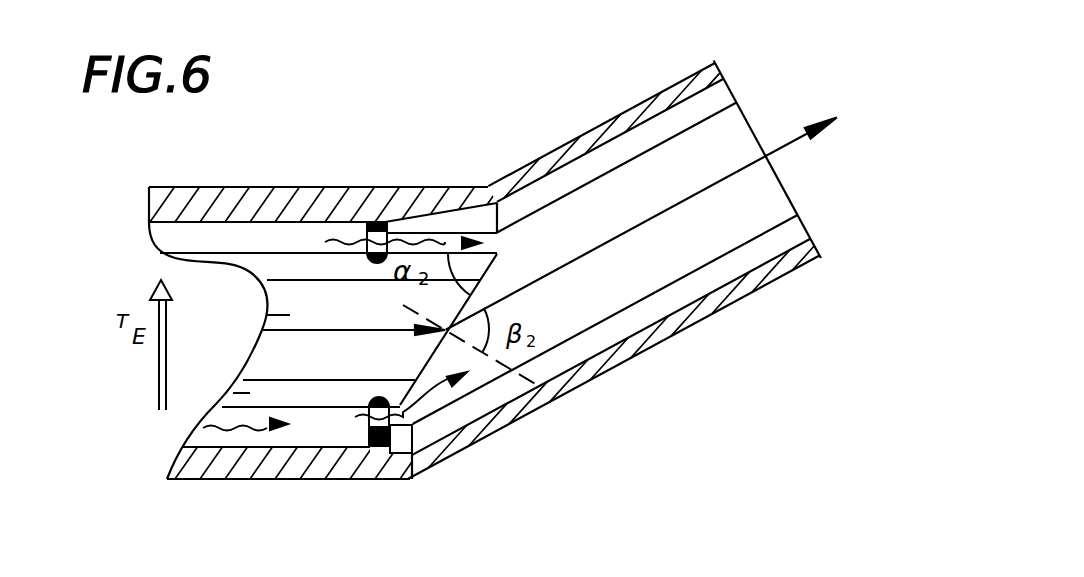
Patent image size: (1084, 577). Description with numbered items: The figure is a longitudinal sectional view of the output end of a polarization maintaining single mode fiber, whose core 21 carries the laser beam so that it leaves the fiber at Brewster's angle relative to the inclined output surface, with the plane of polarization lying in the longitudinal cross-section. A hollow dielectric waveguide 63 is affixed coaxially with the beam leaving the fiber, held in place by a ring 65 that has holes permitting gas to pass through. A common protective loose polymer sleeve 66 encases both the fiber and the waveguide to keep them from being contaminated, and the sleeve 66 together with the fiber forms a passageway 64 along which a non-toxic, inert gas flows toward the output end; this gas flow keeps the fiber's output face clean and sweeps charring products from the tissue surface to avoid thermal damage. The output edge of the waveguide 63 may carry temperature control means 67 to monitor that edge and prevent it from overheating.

The single mode fiber core 21 is at (283, 270).
The hollow dielectric waveguide 63 is at (720, 93).
The passageway 64 is at (270, 233).
The ring 65 is at (394, 187).
The protective loose polymer sleeve 66 is at (590, 366).
The temperature control means 67 is at (712, 72).